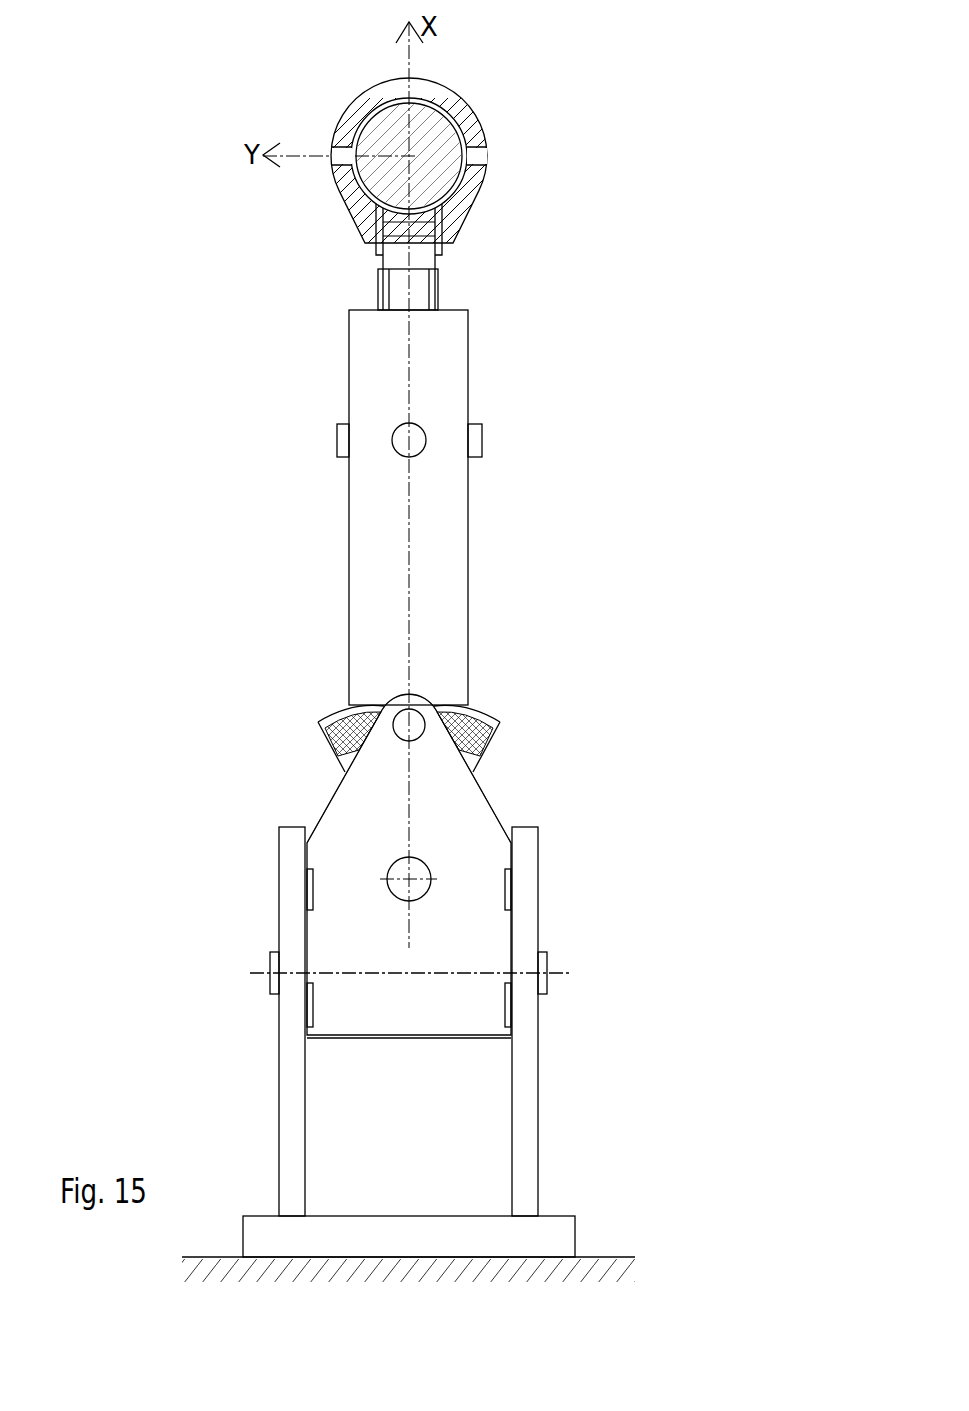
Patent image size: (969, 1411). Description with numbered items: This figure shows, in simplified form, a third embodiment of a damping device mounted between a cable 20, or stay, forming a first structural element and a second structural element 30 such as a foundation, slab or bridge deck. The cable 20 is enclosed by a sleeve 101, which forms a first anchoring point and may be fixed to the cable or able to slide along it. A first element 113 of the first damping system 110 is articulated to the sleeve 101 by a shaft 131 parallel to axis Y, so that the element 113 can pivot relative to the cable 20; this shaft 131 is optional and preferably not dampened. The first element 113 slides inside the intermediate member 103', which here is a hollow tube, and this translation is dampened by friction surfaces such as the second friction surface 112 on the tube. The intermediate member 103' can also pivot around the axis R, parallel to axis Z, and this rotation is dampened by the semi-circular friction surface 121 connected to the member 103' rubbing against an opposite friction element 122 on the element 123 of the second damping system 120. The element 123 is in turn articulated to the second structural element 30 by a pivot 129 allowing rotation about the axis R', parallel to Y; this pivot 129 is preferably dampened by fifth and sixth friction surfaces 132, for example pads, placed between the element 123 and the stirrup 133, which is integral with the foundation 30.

The cable 20 is at (432, 142).
The sleeve 101 is at (470, 182).
The shaft 131 is at (425, 230).
The first element 113 is at (400, 257).
The first damping system 110 is at (418, 292).
The second friction surface 112 is at (475, 437).
The intermediate member 103' is at (464, 507).
The fourth friction element 122 is at (432, 710).
The semi-circular friction surface 121 is at (495, 720).
The element of the second damping system 123 is at (442, 797).
The second damping system 120 is at (463, 842).
The fifth and sixth friction surfaces 132 is at (513, 888).
The pivot 129 is at (547, 987).
The stirrup 133 is at (523, 1133).
The second structural element 30 is at (598, 1249).
The rotation axis R is at (430, 913).
The rotation axis R' is at (440, 943).